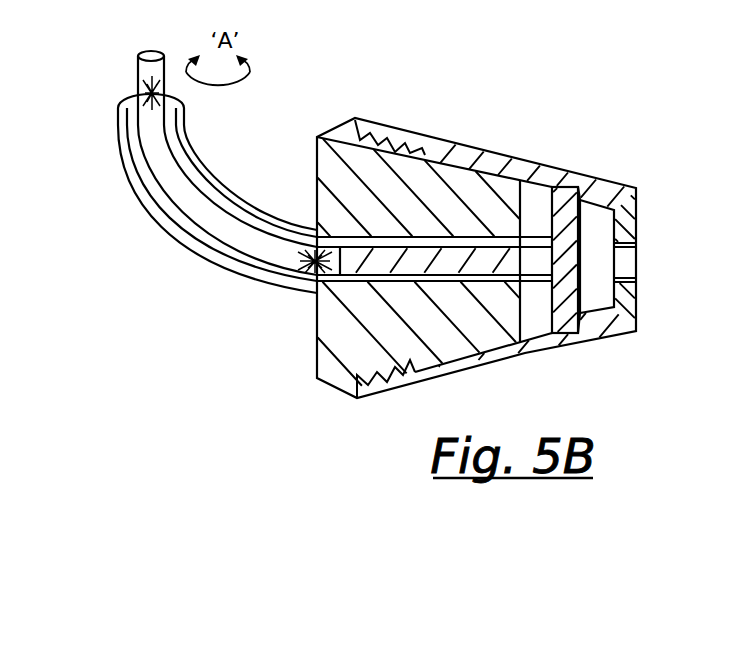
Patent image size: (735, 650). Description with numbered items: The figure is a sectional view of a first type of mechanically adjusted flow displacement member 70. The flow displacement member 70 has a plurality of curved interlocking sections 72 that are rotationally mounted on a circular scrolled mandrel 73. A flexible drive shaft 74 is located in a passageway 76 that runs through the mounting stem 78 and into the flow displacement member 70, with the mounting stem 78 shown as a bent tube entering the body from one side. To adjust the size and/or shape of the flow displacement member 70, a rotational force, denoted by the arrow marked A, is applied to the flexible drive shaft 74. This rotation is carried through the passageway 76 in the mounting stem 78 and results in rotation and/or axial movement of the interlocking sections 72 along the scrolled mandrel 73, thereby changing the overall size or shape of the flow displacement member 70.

The flow displacement member 70 is at (603, 149).
The curved interlocking sections 72 is at (478, 152).
The circular scrolled mandrel 73 is at (403, 198).
The flexible drive shaft 74 is at (245, 250).
The passageway 76 is at (200, 243).
The mounting stem 78 is at (218, 193).